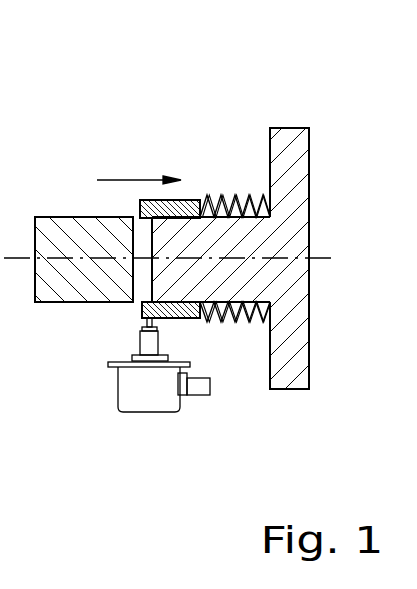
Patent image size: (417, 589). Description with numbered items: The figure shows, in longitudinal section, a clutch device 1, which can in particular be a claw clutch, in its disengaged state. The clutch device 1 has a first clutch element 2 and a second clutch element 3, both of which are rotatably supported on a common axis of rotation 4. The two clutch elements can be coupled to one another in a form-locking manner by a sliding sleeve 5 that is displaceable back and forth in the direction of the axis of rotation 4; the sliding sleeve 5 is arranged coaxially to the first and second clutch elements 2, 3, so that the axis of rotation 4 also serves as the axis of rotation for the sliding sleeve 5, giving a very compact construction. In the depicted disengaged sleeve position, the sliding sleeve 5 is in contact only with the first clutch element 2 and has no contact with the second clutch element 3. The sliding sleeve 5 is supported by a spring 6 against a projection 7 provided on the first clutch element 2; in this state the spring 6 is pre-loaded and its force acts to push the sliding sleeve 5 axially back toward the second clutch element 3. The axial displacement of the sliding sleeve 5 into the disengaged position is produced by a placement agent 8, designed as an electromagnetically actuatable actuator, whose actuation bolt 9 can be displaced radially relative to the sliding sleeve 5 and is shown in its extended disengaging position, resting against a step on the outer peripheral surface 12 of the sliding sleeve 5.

The clutch device 1 is at (222, 131).
The first clutch element 2 is at (234, 242).
The second clutch element 3 is at (70, 237).
The axis of rotation 4 is at (334, 255).
The sliding sleeve 5 is at (150, 198).
The spring 6 is at (241, 324).
The projection 7 is at (270, 155).
The placement agent 8 is at (108, 422).
The actuation bolt 9 is at (146, 322).
The outer peripheral surface 12 is at (188, 322).